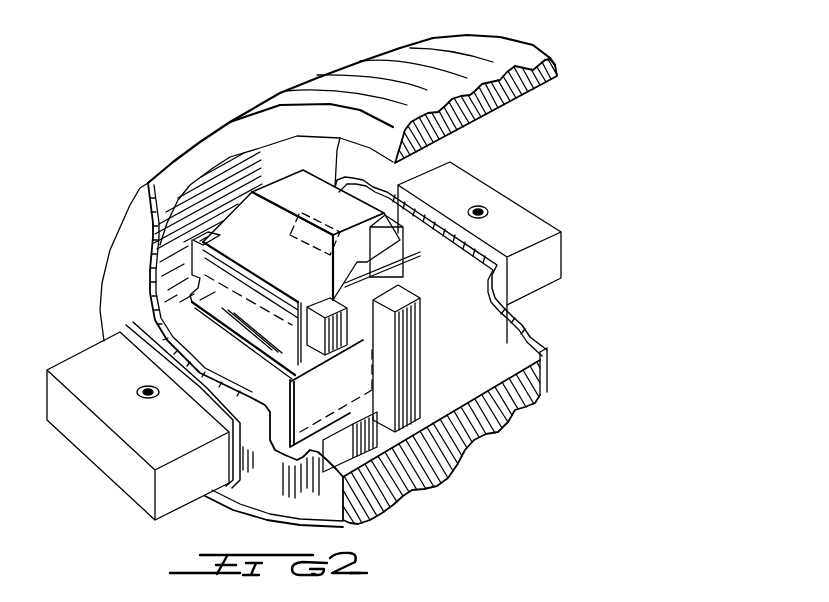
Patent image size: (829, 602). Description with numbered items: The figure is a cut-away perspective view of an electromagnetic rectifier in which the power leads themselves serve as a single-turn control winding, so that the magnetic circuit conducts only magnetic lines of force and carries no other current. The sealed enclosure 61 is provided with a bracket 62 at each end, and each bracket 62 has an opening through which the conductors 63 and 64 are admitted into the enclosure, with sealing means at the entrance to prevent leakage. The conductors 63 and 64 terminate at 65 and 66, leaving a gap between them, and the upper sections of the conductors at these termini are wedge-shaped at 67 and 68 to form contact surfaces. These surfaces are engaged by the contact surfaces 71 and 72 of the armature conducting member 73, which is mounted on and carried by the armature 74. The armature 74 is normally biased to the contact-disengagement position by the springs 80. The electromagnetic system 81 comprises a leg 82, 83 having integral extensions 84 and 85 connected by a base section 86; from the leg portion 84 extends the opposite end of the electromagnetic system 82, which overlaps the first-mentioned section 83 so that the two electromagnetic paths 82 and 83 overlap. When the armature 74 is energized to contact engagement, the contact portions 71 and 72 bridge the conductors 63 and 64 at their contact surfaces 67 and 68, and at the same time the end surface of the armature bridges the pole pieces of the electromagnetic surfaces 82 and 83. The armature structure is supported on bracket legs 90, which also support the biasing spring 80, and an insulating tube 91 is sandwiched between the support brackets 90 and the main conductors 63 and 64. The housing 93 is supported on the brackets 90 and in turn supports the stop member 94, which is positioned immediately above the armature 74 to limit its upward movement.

The sealed enclosure 61 is at (490, 39).
The bracket 62 is at (103, 284).
The conductor 63 is at (100, 460).
The conductor 64 is at (511, 203).
The terminus of conductor 65 is at (378, 387).
The terminus of conductor 66 is at (377, 385).
The wedge-shaped contact surface 67 is at (377, 352).
The wedge-shaped contact surface 68 is at (382, 350).
The contact surface 71 is at (345, 349).
The contact surface 72 is at (400, 336).
The armature conducting member 73 is at (372, 329).
The armature 74 is at (392, 264).
The spring 80 is at (392, 257).
The electromagnetic system 81 is at (402, 492).
The electromagnetic path / leg 82 is at (212, 236).
The electromagnetic path / leg 83 is at (405, 290).
The integral extension 84 is at (418, 379).
The integral extension 85 is at (198, 267).
The base section 86 is at (343, 442).
The bracket leg 90 is at (225, 307).
The insulating tube 91 is at (172, 283).
The housing 93 is at (282, 185).
The stop member 94 is at (365, 240).